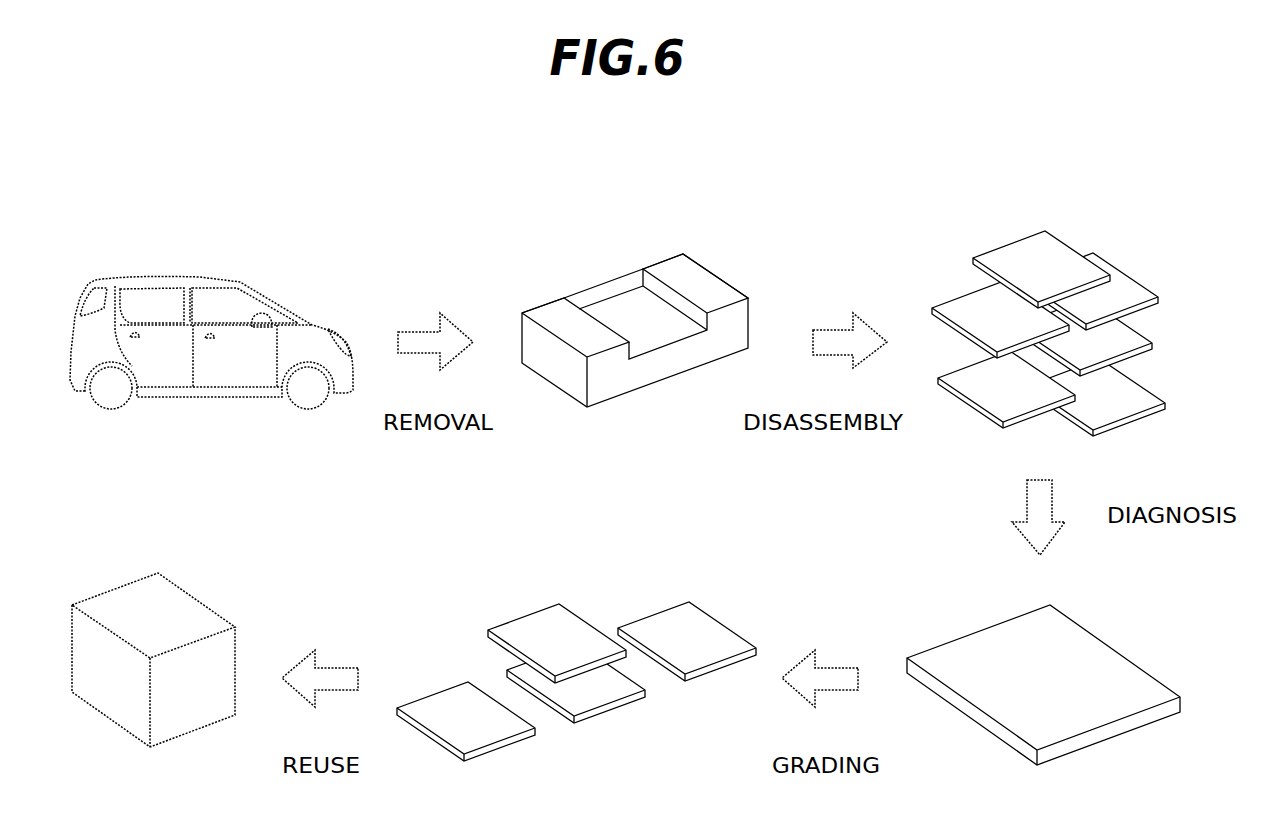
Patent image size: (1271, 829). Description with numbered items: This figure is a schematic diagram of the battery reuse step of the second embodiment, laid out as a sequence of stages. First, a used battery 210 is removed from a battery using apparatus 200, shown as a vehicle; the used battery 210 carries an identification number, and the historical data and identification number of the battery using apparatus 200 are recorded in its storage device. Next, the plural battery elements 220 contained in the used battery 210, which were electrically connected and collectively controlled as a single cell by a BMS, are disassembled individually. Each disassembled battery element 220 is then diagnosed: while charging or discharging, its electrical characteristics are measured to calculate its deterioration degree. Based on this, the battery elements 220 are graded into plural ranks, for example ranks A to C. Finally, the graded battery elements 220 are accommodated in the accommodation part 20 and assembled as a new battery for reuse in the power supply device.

The battery using apparatus 200 is at (162, 279).
The used battery 210 is at (670, 262).
The battery element 220 is at (1020, 243).
The accommodation part 20 is at (183, 604).